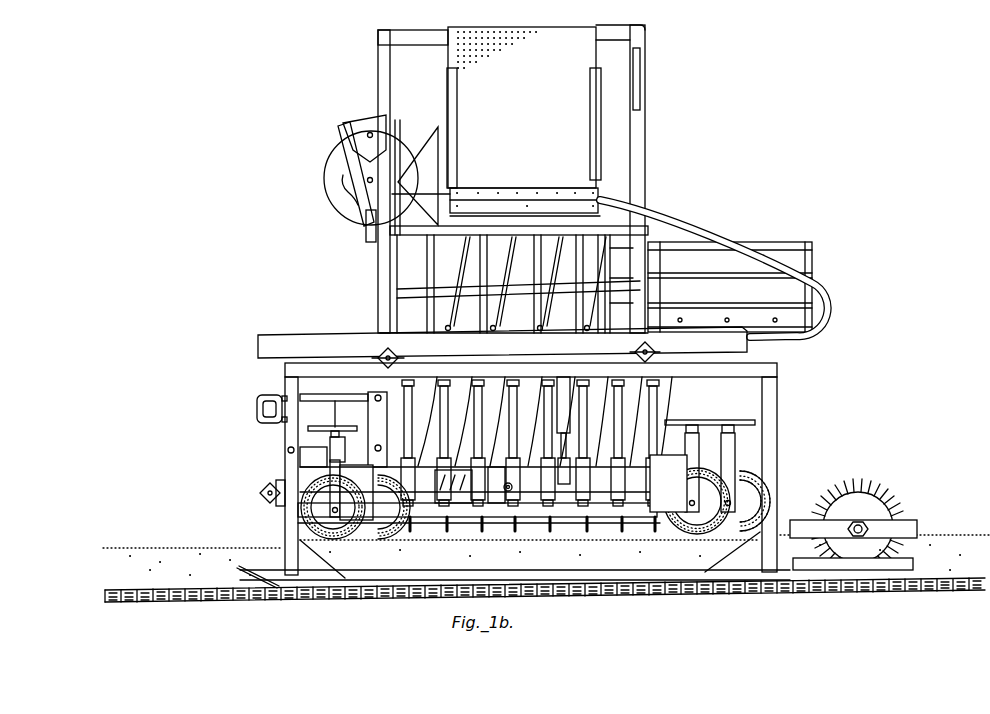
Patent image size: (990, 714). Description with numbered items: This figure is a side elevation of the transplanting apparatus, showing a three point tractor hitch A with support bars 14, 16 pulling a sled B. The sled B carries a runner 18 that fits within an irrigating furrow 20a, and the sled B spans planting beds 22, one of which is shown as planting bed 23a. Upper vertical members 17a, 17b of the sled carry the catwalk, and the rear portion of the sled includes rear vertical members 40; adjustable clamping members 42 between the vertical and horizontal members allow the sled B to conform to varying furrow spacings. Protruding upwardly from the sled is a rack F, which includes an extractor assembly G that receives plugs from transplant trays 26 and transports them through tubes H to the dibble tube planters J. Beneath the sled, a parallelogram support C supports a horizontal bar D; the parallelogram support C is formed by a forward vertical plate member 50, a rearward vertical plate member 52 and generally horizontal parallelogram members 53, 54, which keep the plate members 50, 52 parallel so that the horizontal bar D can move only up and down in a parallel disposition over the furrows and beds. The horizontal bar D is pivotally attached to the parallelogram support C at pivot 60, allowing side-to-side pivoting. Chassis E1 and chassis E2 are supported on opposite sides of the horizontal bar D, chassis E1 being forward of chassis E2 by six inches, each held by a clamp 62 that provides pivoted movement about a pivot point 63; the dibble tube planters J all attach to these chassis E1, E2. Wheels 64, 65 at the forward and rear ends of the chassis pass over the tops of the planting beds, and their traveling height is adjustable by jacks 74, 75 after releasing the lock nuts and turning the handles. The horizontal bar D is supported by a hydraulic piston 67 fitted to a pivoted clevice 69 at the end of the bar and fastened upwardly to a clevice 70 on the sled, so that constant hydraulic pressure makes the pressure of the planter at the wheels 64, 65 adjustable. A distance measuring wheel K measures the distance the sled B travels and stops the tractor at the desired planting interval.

The transplant trays 26 is at (583, 53).
The rack F is at (613, 170).
The extractor assembly G is at (598, 190).
The tubes H is at (490, 268).
The clamping members 42 is at (385, 352).
The upper vertical member 17a is at (398, 354).
The upper vertical member 17b is at (655, 349).
The clevice 70 is at (584, 344).
The rear vertical members 40 is at (778, 408).
The horizontal parallelogram member 53 is at (330, 405).
The forward vertical plate member 50 is at (332, 419).
The parallelogram support C is at (341, 423).
The rearward vertical plate member 52 is at (376, 429).
The support bar 14 is at (258, 418).
The three point tractor hitch A is at (235, 450).
The jack 74 is at (330, 442).
The horizontal parallelogram member 54 is at (300, 456).
The support bar 16 is at (265, 488).
The sled B is at (266, 534).
The horizontal bar D is at (430, 465).
The pivot 60 is at (395, 488).
The clamp 62 is at (509, 483).
The pivot point 63 is at (522, 462).
The hydraulic piston 67 is at (570, 413).
The pivoted clevice 69 is at (568, 456).
The jack 75 is at (703, 420).
The chassis E2 is at (742, 466).
The chassis E1 is at (380, 540).
The wheel 64 is at (330, 540).
The wheel 65 is at (705, 537).
The runner 18 is at (421, 557).
The planting beds 22 is at (462, 549).
The dibble tube planters J is at (470, 528).
The furrow 20a is at (500, 590).
The planting bed 23a is at (120, 548).
The distance measuring wheel K is at (878, 500).